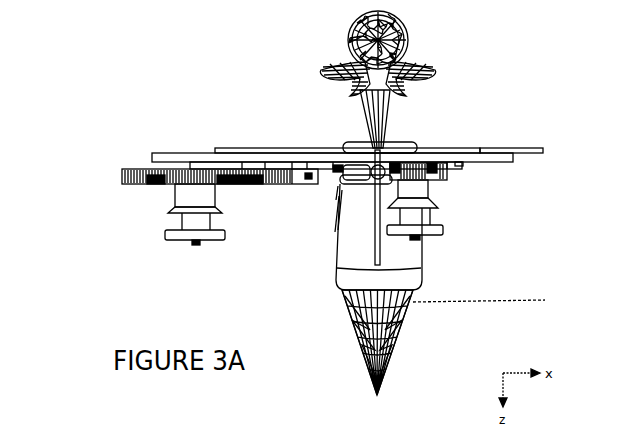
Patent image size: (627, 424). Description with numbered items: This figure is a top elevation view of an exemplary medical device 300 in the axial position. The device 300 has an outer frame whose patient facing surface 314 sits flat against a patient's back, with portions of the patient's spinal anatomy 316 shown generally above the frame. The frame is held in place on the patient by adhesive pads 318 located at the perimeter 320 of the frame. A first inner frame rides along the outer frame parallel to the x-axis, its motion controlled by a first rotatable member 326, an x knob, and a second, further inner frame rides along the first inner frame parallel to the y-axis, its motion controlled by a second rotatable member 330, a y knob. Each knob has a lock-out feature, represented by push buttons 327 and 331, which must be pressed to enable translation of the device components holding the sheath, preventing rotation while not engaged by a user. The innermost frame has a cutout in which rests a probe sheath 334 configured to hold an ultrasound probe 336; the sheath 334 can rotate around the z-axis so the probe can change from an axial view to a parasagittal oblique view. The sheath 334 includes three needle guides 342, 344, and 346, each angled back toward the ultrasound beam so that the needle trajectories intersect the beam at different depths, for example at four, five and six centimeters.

The device 300 is at (174, 110).
The patient facing surface 314 is at (268, 140).
The spinal anatomy 316 is at (460, 75).
The adhesive pads 318 is at (228, 148).
The perimeter 320 is at (536, 173).
The first rotatable member 326 is at (192, 197).
The push button 327 is at (193, 230).
The second rotatable member 330 is at (415, 215).
The push button 331 is at (443, 230).
The probe sheath 334 is at (395, 262).
The ultrasound probe 336 is at (395, 347).
The needle guide 342 is at (332, 199).
The needle guide 344 is at (332, 207).
The needle guide 346 is at (335, 223).